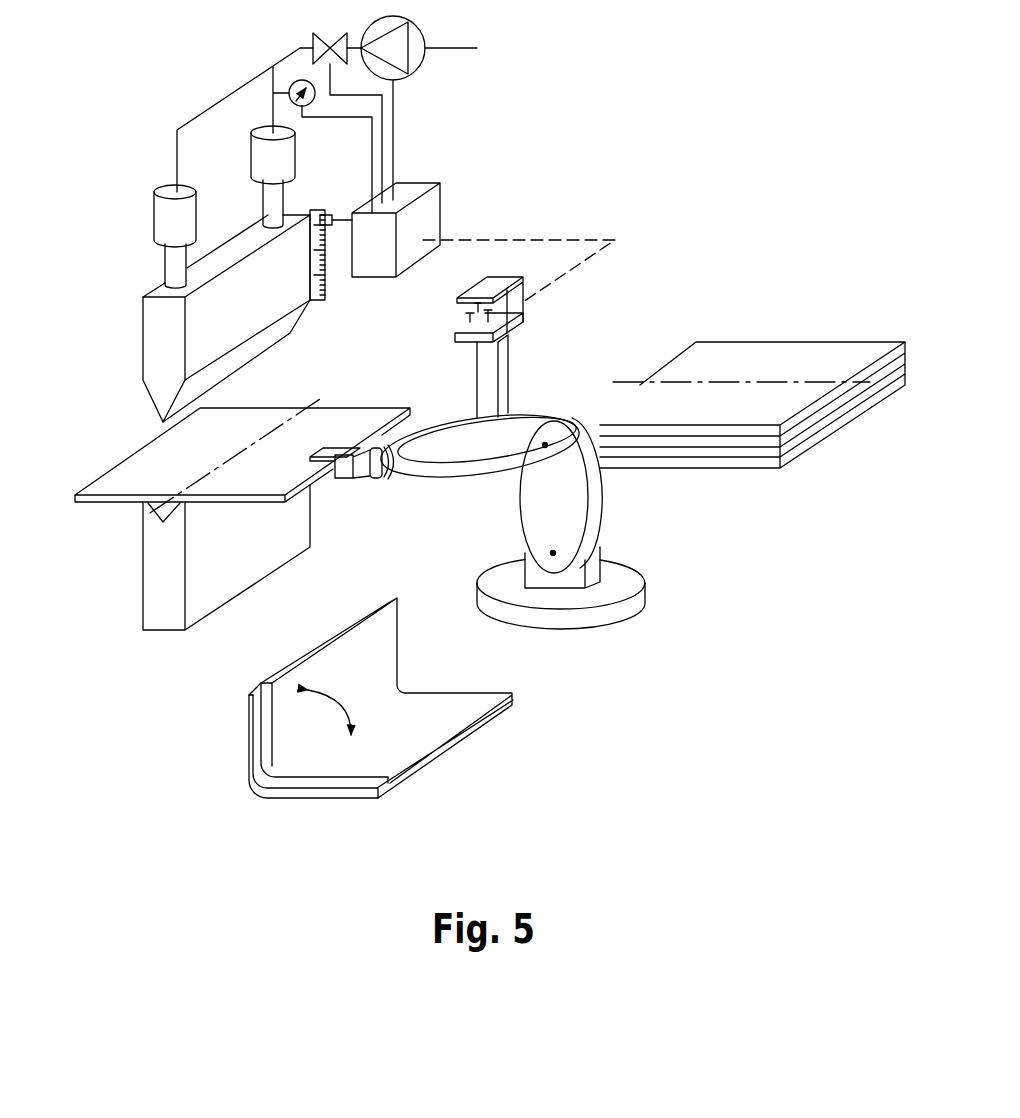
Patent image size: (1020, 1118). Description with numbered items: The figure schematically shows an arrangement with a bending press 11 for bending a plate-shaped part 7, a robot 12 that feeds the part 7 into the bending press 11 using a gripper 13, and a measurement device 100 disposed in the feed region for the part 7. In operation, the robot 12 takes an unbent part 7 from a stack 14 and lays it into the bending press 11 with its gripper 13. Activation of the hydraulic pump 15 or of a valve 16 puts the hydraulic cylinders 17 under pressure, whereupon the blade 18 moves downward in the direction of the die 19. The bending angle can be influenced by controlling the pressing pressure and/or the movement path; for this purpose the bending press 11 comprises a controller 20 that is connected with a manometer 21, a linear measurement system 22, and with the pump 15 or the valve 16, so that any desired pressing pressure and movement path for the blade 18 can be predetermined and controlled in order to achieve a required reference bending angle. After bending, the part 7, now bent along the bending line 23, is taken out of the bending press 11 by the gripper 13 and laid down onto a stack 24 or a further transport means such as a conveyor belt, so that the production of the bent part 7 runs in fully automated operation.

The plate-shaped object (bent part) 7 is at (128, 468).
The bending press 11 is at (204, 274).
The robot 12 is at (486, 510).
The gripper 13 is at (348, 470).
The stack 14 is at (747, 357).
The hydraulic pump 15 is at (417, 38).
The valve 16 is at (317, 37).
The hydraulic cylinders 17 is at (163, 218).
The blade 18 is at (157, 347).
The die 19 is at (158, 578).
The controller 20 is at (430, 213).
The manometer 21 is at (290, 82).
The linear measurement system 22 is at (318, 298).
The bending line 23 is at (223, 463).
The stack 24 is at (412, 733).
The measurement device 100 is at (520, 310).